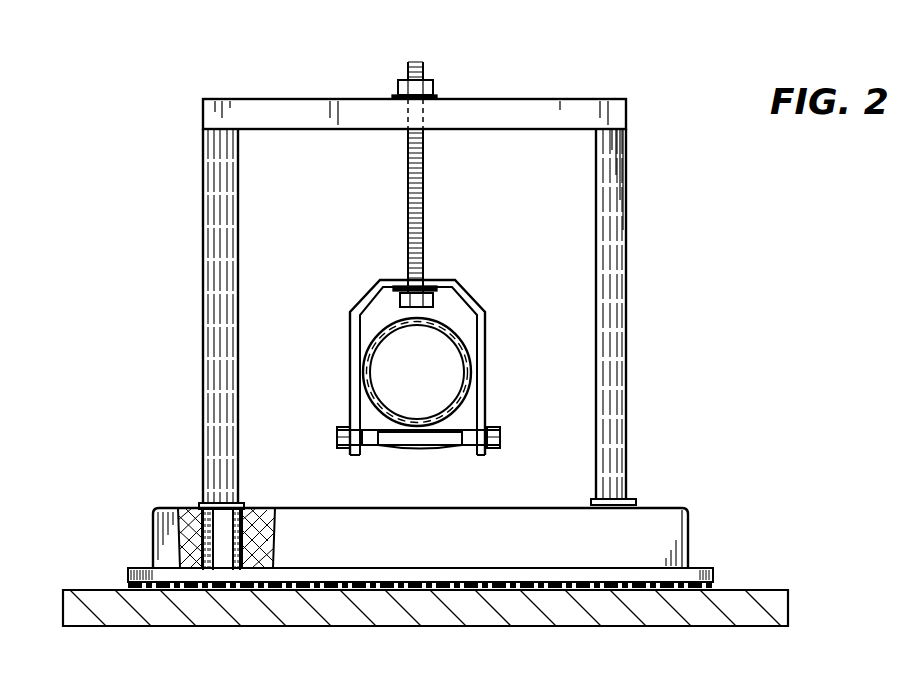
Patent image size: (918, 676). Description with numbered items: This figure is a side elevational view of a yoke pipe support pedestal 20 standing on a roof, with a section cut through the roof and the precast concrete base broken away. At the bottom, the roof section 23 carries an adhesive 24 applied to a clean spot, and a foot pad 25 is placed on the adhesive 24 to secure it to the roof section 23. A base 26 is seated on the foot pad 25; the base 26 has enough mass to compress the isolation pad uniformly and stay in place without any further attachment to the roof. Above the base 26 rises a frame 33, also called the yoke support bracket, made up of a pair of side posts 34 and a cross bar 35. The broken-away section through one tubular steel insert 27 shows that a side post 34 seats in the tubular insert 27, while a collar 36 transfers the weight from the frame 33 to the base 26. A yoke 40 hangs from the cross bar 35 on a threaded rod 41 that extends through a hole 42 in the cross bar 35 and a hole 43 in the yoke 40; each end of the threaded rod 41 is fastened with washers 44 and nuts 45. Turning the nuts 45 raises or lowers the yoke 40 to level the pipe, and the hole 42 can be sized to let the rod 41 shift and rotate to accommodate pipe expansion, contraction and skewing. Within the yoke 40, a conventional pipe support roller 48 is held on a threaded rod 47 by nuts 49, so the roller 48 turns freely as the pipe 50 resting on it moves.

The yoke pipe support pedestal 20 is at (652, 302).
The roof section 23 is at (92, 602).
The adhesive 24 is at (722, 586).
The foot pad 25 is at (710, 575).
The base 26 is at (672, 524).
The tubular steel insert 27 is at (176, 536).
The frame 33 is at (374, 139).
The side post 34 is at (205, 357).
The cross bar 35 is at (580, 106).
The collar 36 is at (204, 504).
The yoke 40 is at (472, 296).
The threaded rod 41 is at (426, 183).
The hole 42 is at (422, 115).
The hole 43 is at (432, 285).
The washer 44 is at (395, 95).
The nut 45 is at (402, 94).
The threaded rod 47 is at (503, 437).
The pipe support roller 48 is at (421, 448).
The nut 49 is at (340, 432).
The pipe 50 is at (460, 346).